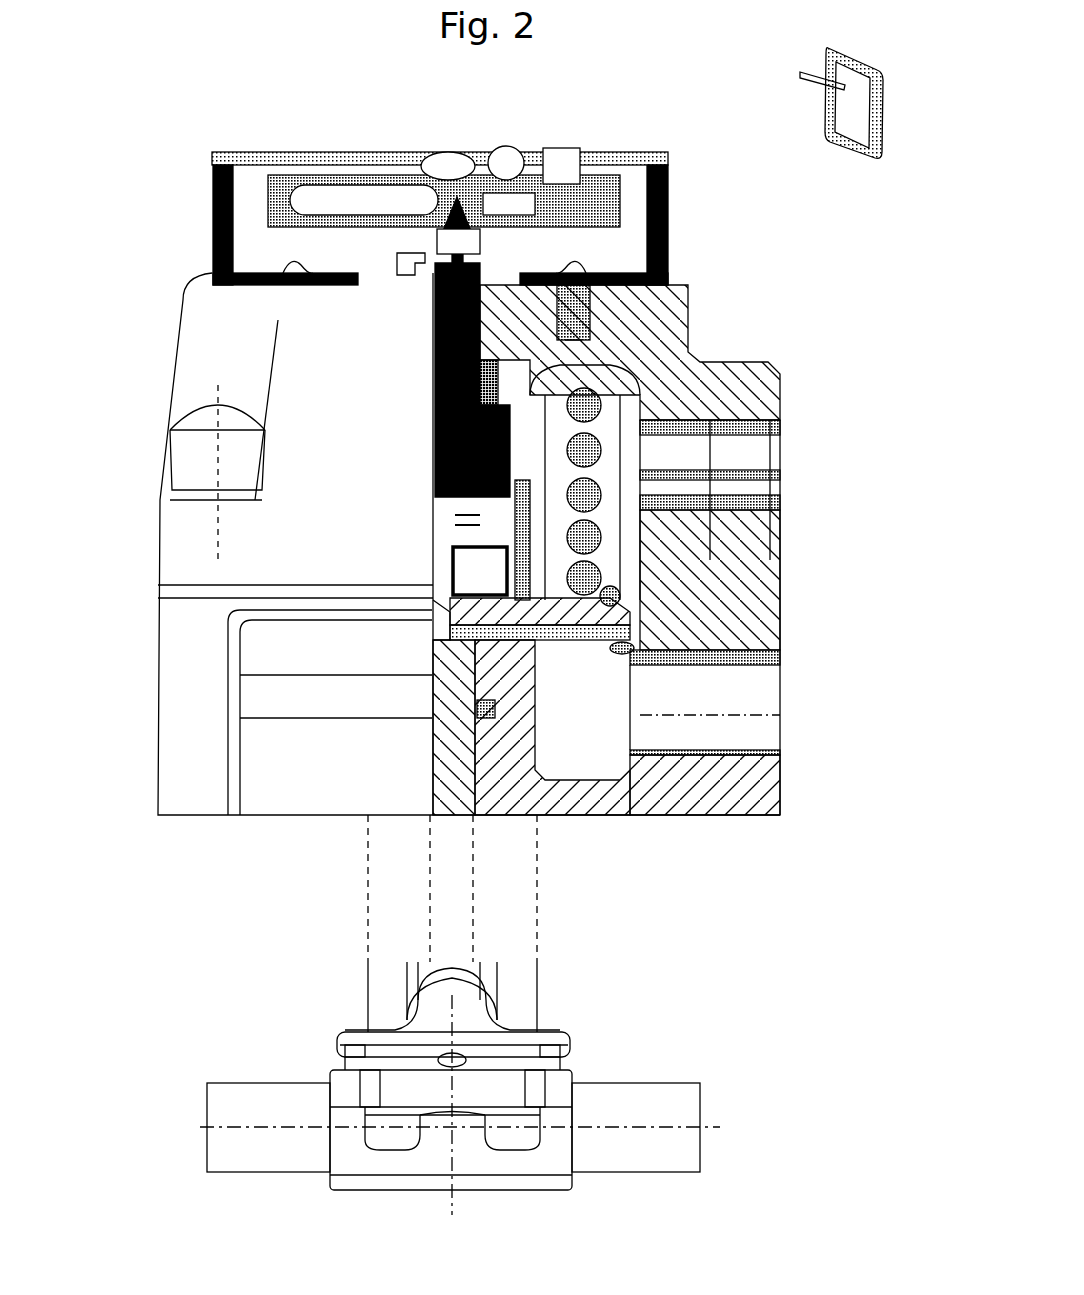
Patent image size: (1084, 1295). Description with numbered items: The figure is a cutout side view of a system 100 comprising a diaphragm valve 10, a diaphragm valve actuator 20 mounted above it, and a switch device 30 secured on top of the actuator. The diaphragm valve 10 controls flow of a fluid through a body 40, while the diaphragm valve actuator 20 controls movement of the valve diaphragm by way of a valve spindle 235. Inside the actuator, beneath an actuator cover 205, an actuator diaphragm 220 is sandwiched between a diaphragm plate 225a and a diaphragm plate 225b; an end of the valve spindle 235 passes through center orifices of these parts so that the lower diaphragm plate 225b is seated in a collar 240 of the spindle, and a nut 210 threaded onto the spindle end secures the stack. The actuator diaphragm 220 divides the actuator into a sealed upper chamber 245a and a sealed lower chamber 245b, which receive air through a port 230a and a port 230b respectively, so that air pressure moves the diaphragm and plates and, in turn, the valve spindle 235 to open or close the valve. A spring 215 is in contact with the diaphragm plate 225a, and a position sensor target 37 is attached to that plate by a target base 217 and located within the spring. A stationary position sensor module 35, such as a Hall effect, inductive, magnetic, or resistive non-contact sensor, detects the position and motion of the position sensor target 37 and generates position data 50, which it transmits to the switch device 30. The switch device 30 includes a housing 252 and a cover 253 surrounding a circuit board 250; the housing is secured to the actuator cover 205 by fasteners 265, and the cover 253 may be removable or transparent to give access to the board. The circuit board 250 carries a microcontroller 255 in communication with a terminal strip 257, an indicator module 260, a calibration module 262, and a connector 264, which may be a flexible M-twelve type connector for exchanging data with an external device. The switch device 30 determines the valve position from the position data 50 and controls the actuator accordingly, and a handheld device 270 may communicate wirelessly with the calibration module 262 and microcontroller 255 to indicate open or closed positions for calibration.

The system 100 is at (463, 86).
The diaphragm valve 10 is at (600, 1048).
The diaphragm valve actuator 20 is at (512, 539).
The switch device 30 is at (245, 214).
The position sensor module 35 is at (485, 425).
The position sensor target 37 is at (525, 478).
The body 40 is at (482, 1130).
The position data 50 is at (458, 240).
The actuator cover 205 is at (188, 367).
The nut 210 is at (455, 569).
The spring 215 is at (595, 494).
The target base 217 is at (527, 540).
The actuator diaphragm 220 is at (598, 611).
The diaphragm plate 225a is at (617, 598).
The diaphragm plate 225b is at (630, 656).
The port 230a is at (775, 453).
The port 230b is at (768, 745).
The valve spindle 235 is at (462, 712).
The collar 240 is at (445, 640).
The upper chamber 245a is at (622, 382).
The lower chamber 245b is at (605, 758).
The circuit board 250 is at (535, 205).
The housing 252 is at (660, 250).
The cover 253 is at (652, 157).
The microcontroller 255 is at (364, 200).
The terminal strip 257 is at (509, 204).
The indicator module 260 is at (448, 166).
The calibration module 262 is at (506, 163).
The connector 264 is at (561, 166).
The fasteners 265 is at (283, 268).
The handheld device 270 is at (850, 140).